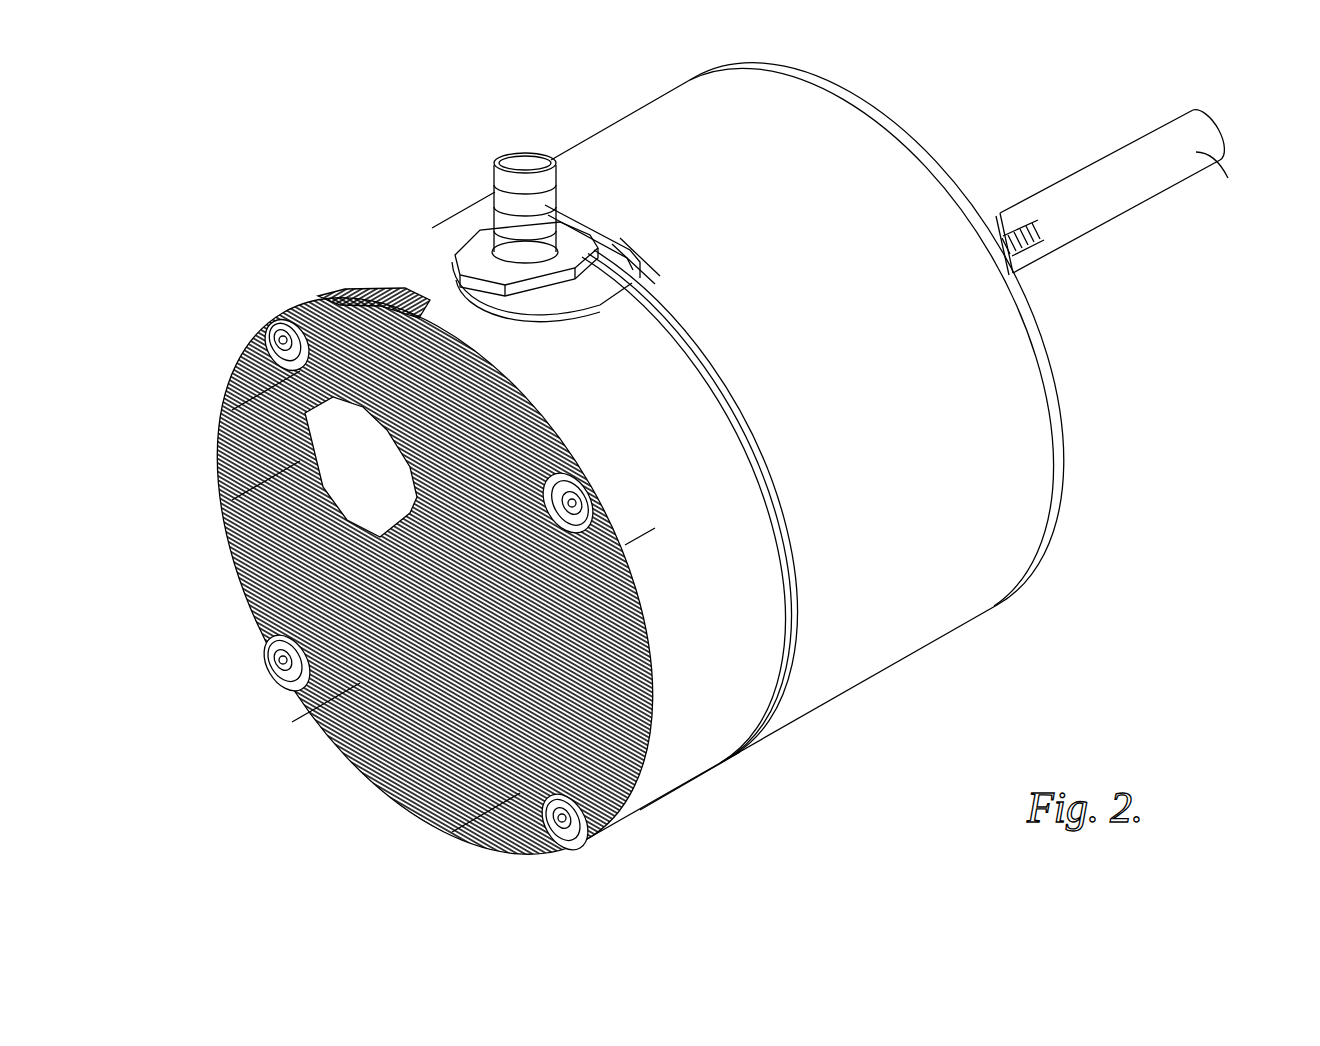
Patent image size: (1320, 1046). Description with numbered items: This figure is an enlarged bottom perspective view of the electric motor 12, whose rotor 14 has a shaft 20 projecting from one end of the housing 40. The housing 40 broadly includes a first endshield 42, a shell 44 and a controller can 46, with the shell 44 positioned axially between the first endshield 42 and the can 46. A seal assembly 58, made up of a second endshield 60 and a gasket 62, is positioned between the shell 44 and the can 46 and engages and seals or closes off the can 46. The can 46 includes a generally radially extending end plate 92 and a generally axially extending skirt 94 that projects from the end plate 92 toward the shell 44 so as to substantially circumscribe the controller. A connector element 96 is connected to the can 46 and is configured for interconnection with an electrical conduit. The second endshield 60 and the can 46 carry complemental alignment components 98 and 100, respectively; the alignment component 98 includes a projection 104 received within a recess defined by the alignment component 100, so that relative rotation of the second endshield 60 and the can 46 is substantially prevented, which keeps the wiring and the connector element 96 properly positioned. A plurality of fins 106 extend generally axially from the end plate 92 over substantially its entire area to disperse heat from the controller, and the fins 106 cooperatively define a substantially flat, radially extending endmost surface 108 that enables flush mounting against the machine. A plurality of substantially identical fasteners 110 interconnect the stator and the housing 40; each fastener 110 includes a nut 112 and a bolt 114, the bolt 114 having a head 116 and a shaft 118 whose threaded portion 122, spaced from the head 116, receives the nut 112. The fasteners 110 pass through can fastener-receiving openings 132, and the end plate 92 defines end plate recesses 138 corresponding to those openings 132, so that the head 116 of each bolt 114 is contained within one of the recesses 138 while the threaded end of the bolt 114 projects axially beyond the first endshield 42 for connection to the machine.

The electric motor 12 is at (1058, 60).
The rotor 14 is at (1084, 156).
The shaft 20 is at (1200, 152).
The housing 40 is at (594, 106).
The first endshield 42 is at (1062, 453).
The shell 44 is at (955, 612).
The controller can 46 is at (695, 782).
The seal assembly 58 is at (732, 356).
The second endshield 60 is at (784, 502).
The gasket 62 is at (780, 575).
The end plate 92 is at (345, 300).
The skirt 94 is at (420, 255).
The connector element 96 is at (494, 178).
The alignment component 98 is at (608, 226).
The alignment component 100 is at (590, 298).
The projection 104 is at (630, 262).
The fins 106 is at (230, 410).
The endmost surface 108 is at (230, 500).
The fastener 110 is at (278, 318).
The nut 112 is at (1020, 262).
The bolt 114 is at (1010, 212).
The head 116 is at (285, 332).
The shaft 118 is at (1046, 242).
The threaded portion 122 is at (1042, 236).
The can fastener-receiving openings 132 is at (266, 345).
The end plate recess 138 is at (268, 325).